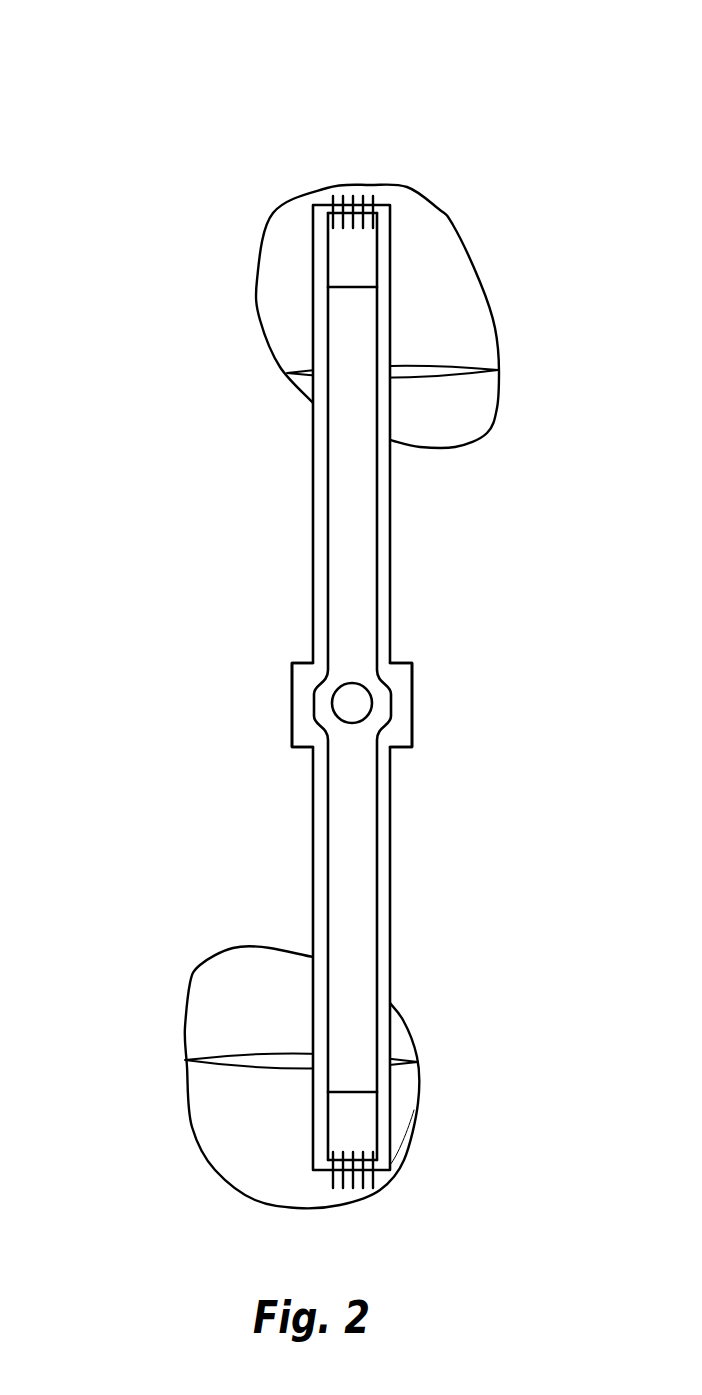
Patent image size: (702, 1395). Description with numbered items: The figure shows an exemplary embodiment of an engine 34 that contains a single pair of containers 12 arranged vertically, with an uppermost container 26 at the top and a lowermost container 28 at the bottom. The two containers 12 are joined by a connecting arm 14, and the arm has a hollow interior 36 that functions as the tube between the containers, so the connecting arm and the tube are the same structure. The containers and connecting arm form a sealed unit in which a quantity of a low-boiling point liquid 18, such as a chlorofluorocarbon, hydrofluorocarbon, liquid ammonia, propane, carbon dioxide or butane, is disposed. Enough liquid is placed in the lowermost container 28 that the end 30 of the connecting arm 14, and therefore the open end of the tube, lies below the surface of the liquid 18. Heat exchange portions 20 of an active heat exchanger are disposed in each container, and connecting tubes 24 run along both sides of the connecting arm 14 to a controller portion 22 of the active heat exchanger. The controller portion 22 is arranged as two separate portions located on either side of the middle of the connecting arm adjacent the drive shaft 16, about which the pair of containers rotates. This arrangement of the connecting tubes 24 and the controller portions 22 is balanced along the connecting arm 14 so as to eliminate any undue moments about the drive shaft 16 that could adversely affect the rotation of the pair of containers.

The engine 34 is at (128, 147).
The containers 12 is at (452, 225).
The connecting arm 14 is at (377, 608).
The drive shaft 16 is at (355, 702).
The low-boiling point liquid 18 is at (480, 412).
The heat exchange portions 20 is at (356, 195).
The controller portion 22 is at (303, 725).
The connecting tubes 24 is at (382, 548).
The uppermost container 26 is at (495, 330).
The lowermost container 28 is at (413, 1132).
The end of the connecting arm 30 is at (362, 1092).
The hollow interior 36 is at (340, 506).